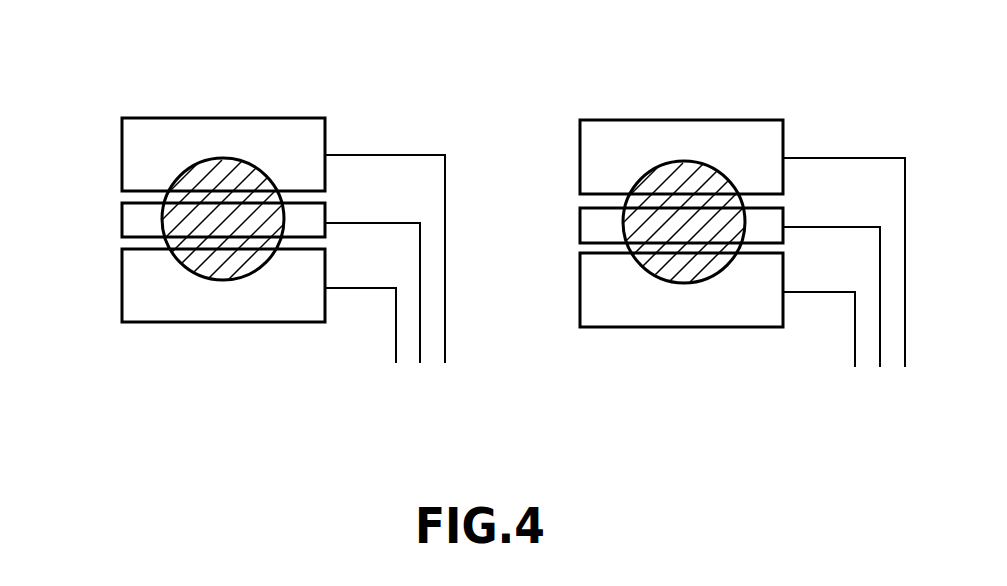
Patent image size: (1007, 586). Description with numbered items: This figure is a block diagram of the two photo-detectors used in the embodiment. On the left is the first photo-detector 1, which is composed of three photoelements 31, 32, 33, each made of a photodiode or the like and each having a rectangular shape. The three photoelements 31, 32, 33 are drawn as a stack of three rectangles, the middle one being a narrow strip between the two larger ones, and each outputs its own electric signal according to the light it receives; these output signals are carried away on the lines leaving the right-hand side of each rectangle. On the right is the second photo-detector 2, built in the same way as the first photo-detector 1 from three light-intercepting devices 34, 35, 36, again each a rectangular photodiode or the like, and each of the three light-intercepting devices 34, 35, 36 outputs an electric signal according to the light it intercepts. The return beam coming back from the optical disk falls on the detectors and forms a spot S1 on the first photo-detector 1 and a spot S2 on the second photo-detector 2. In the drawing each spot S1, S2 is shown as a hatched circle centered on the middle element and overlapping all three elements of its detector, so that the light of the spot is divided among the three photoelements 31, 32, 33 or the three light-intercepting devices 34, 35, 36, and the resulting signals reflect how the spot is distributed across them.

The first photo-detector 1 is at (223, 114).
The second photo-detector 2 is at (682, 117).
The photoelement 31 is at (122, 153).
The photoelement 32 is at (122, 218).
The photoelement 33 is at (122, 283).
The light-intercepting device 34 is at (580, 157).
The light-intercepting device 35 is at (580, 223).
The light-intercepting device 36 is at (580, 287).
The spot S1 is at (183, 274).
The spot S2 is at (643, 276).